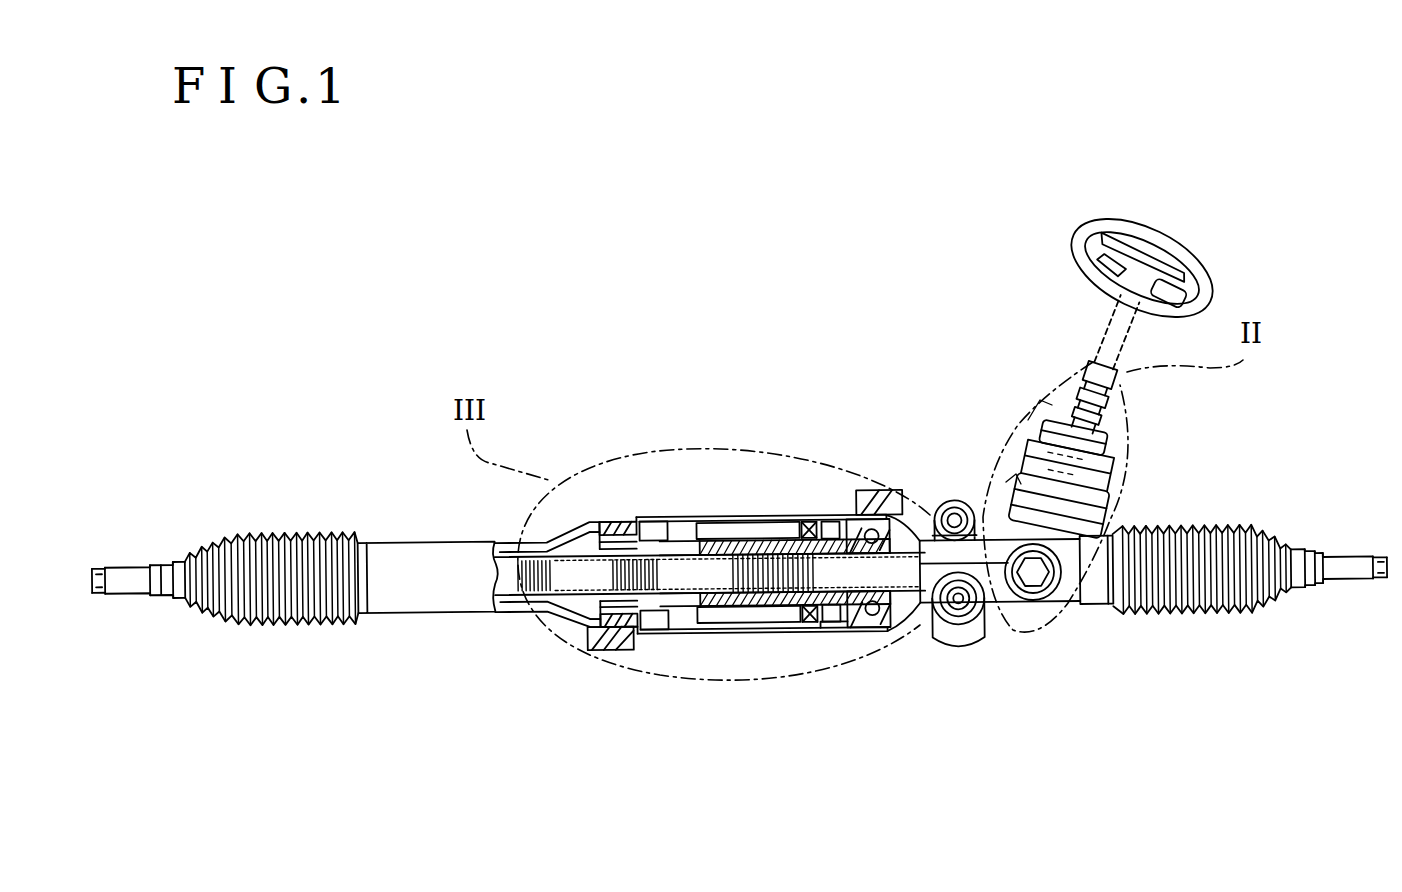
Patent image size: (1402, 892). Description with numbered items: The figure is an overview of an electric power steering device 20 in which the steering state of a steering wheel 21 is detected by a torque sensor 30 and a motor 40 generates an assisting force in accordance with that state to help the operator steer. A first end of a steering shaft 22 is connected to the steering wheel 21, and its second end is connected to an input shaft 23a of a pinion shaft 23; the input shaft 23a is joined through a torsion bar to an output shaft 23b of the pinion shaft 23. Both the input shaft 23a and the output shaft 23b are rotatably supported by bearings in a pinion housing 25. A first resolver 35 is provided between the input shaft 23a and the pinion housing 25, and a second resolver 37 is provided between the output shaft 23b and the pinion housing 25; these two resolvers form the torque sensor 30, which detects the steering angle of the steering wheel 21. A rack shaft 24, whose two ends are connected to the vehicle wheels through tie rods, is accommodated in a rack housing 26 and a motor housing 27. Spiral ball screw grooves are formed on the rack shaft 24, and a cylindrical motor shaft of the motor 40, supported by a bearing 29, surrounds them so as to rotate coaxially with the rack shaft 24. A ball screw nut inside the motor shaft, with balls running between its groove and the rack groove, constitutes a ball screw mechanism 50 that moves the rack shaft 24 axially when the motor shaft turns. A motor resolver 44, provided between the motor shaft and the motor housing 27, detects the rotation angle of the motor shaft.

The electric power steering device 20 is at (336, 326).
The steering wheel 21 is at (1203, 262).
The steering shaft 22 is at (1093, 338).
The pinion shaft 23 is at (1108, 401).
The input shaft 23a is at (1022, 410).
The output shaft 23b is at (1000, 468).
The rack shaft 24 is at (501, 602).
The pinion housing 25 is at (1013, 442).
The rack housing 26 is at (513, 541).
The motor housing 27 is at (761, 515).
The bearing 29 is at (848, 512).
The torque sensor 30 is at (1220, 425).
The first resolver 35 is at (1127, 457).
The second resolver 37 is at (1125, 486).
The motor 40 is at (705, 506).
The motor resolver 44 is at (832, 637).
The ball screw mechanism 50 is at (602, 532).